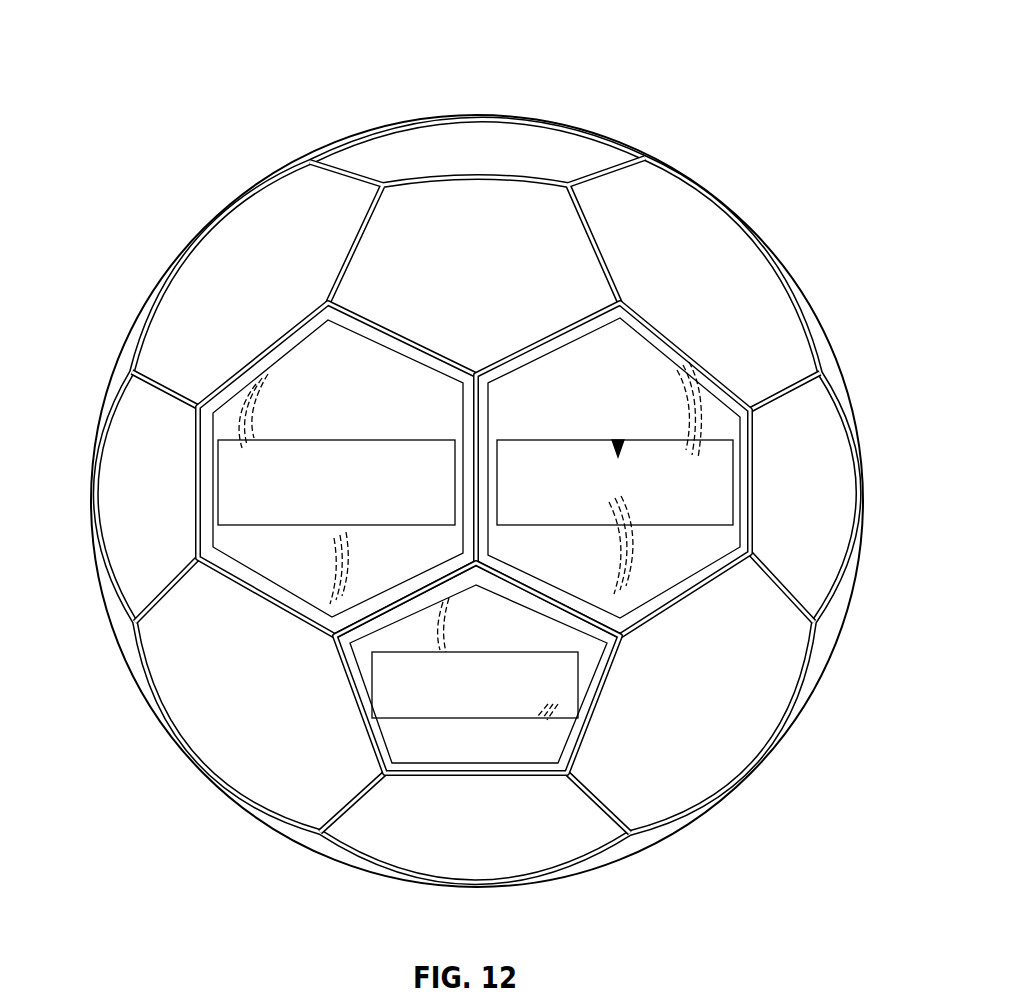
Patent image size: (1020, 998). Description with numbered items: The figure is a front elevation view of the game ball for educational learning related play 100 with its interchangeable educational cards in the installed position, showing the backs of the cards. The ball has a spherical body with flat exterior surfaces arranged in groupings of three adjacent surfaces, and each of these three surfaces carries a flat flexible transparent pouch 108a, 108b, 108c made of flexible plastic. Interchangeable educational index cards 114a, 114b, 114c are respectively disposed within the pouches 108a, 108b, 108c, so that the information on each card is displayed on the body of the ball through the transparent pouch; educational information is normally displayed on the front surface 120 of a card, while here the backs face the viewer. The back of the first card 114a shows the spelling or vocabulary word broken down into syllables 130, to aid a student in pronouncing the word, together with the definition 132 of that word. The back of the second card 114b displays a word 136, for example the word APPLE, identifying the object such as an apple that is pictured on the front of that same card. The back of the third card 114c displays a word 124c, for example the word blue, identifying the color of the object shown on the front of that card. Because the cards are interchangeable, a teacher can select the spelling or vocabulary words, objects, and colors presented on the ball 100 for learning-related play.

The game ball for educational learning related play 100 is at (211, 38).
The flat flexible transparent pouch 108a is at (276, 353).
The flat flexible transparent pouch 108b is at (443, 763).
The flat flexible transparent pouch 108c is at (675, 590).
The interchangeable educational index card 114a is at (233, 456).
The interchangeable educational index card 114b is at (722, 467).
The interchangeable educational index card 114c is at (483, 708).
The front surface 120 is at (618, 442).
The word 124c is at (490, 688).
The syllables 130 is at (226, 458).
The definition 132 is at (232, 510).
The word 136 is at (656, 481).